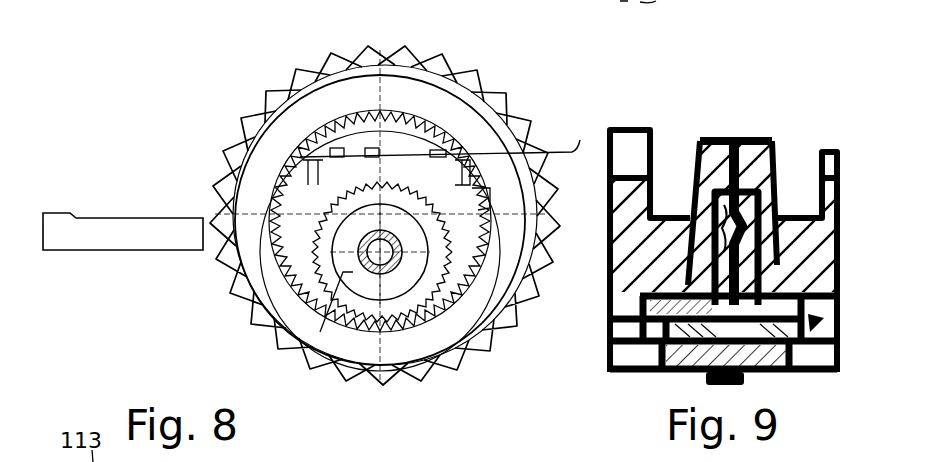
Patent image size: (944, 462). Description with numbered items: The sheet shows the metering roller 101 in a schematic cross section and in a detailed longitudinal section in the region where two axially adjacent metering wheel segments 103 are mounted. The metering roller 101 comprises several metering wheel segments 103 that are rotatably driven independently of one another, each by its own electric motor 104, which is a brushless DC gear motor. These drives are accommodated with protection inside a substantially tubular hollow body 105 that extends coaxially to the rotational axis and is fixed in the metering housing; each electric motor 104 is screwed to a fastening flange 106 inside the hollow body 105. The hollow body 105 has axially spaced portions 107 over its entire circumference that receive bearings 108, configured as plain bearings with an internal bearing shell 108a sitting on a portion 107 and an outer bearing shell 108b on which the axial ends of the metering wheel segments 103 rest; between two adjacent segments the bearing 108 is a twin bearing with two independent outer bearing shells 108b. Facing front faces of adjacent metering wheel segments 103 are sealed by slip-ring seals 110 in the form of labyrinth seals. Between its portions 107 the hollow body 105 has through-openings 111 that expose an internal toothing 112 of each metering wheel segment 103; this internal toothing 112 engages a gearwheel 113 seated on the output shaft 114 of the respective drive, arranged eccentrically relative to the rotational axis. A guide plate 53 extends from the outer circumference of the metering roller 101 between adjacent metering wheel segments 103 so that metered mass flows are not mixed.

In FIG. 8, the guide plate 53 is at (108, 230).
In FIG. 9, the metering roller 101 is at (790, 122).
In FIG. 8, the metering wheel segment 103 is at (463, 127).
In FIG. 9, the metering wheel segment 103 is at (633, 237).
In FIG. 8, the electric motor 104 is at (495, 145).
In FIG. 8, the substantially tubular hollow body 105 is at (315, 72).
In FIG. 8, the fastening flange 106 is at (455, 300).
In FIG. 8, the portion over the entire circumference 107 is at (215, 285).
In FIG. 9, the portion over the entire circumference 107 is at (677, 355).
In FIG. 9, the bearing 108 is at (832, 330).
In FIG. 9, the internal bearing shell 108a is at (800, 290).
In FIG. 9, the outer bearing shell 108b is at (610, 355).
In FIG. 9, the slip-ring seal 110 is at (612, 295).
In FIG. 9, the through-opening 111 is at (637, 355).
In FIG. 8, the internal toothing 112 is at (226, 150).
In FIG. 8, the gearwheel 113 is at (310, 357).
In FIG. 8, the output shaft 114 is at (375, 268).